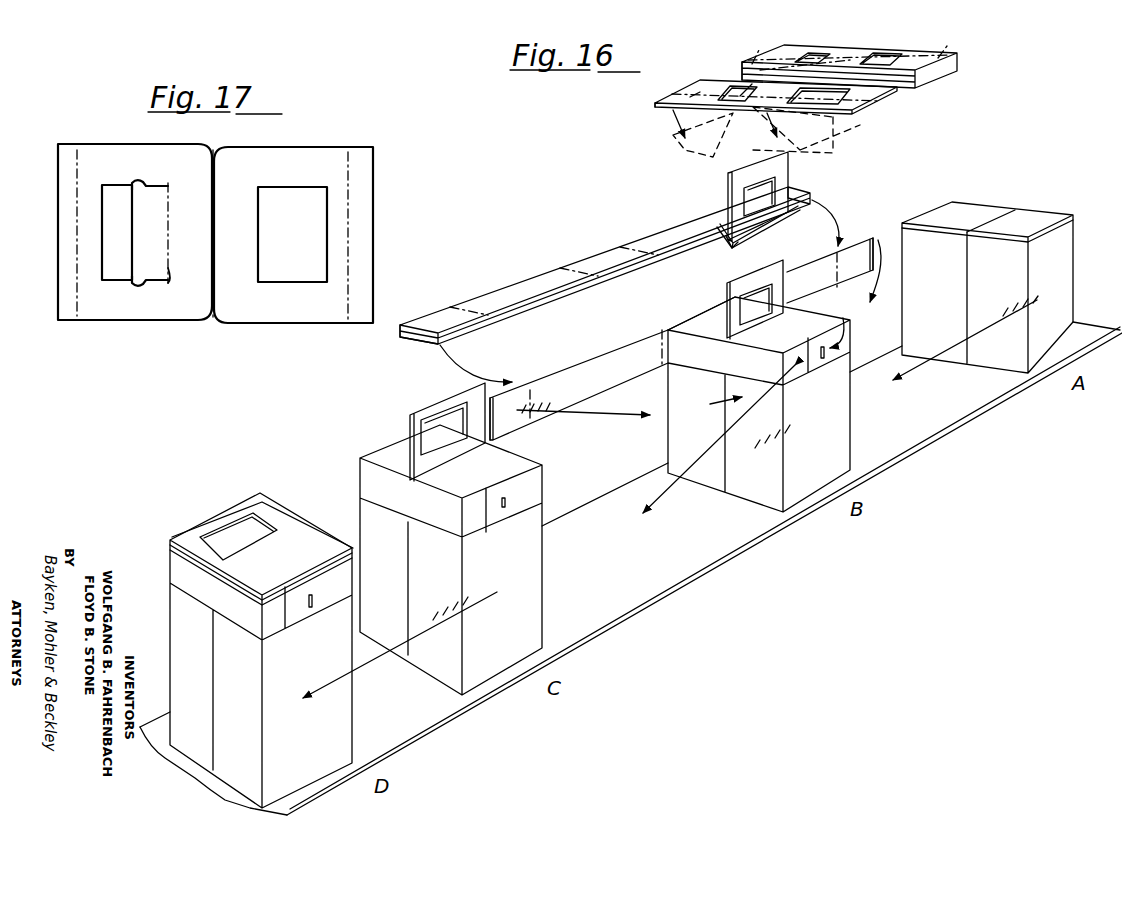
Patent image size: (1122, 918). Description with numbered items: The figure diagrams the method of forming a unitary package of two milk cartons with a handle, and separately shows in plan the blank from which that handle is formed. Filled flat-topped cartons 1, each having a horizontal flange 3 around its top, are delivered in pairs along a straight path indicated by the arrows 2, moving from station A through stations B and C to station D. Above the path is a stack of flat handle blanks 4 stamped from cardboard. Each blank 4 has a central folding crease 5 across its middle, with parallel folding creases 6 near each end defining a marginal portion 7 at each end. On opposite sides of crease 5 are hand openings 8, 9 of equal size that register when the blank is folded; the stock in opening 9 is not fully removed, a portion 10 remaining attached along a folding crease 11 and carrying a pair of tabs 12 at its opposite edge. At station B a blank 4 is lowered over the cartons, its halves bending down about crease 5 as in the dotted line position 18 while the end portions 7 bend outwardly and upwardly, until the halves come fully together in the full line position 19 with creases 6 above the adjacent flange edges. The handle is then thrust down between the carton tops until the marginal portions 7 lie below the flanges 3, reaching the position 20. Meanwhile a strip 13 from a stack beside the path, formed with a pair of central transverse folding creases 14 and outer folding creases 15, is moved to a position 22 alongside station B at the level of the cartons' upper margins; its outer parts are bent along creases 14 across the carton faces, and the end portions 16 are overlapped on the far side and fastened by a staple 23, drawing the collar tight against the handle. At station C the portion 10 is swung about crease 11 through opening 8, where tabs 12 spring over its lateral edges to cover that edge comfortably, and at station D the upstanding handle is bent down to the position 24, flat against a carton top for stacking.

In FIG. 16, the carton 1 is at (939, 269).
In FIG. 16, the arrows indicating path of travel 2 is at (916, 372).
In FIG. 16, the flange 3 is at (1073, 222).
In FIG. 17, the handle blank 4 is at (309, 145).
In FIG. 16, the handle blank 4 is at (952, 70).
In FIG. 17, the central folding crease 5 is at (218, 170).
In FIG. 16, the central folding crease 5 is at (866, 57).
In FIG. 17, the folding crease 6 is at (77, 214).
In FIG. 16, the folding crease 6 is at (790, 53).
In FIG. 17, the marginal portion 7 is at (58, 262).
In FIG. 16, the marginal portion 7 is at (760, 56).
In FIG. 17, the hand opening 8 is at (279, 187).
In FIG. 16, the hand opening 8 is at (880, 55).
In FIG. 17, the hand opening 9 is at (112, 185).
In FIG. 16, the hand opening 9 is at (813, 53).
In FIG. 17, the portion 10 is at (168, 190).
In FIG. 16, the portion 10 is at (838, 56).
In FIG. 17, the folding crease 11 is at (168, 278).
In FIG. 16, the folding crease 11 is at (750, 100).
In FIG. 17, the tab 12 is at (141, 186).
In FIG. 16, the strip 13 is at (535, 272).
In FIG. 16, the central transverse folding crease 14 is at (588, 268).
In FIG. 16, the folding crease 15 is at (455, 310).
In FIG. 16, the end portion 16 is at (428, 320).
In FIG. 16, the dotted line position 18 is at (705, 150).
In FIG. 16, the full line position 19 is at (728, 248).
In FIG. 16, the handle position 20 is at (724, 294).
In FIG. 16, the strip position 22 is at (640, 333).
In FIG. 16, the staple 23 is at (321, 618).
In FIG. 16, the bent-down handle position 24 is at (246, 512).